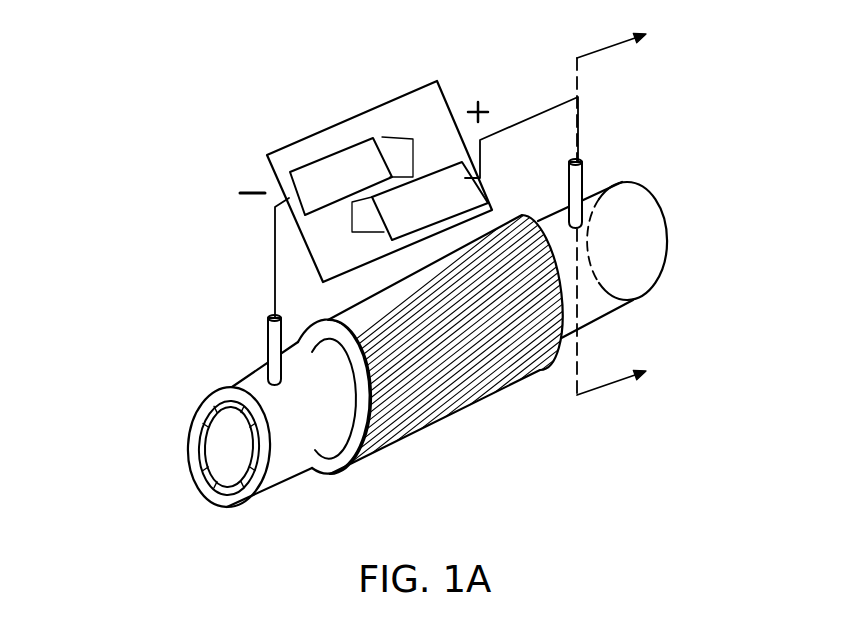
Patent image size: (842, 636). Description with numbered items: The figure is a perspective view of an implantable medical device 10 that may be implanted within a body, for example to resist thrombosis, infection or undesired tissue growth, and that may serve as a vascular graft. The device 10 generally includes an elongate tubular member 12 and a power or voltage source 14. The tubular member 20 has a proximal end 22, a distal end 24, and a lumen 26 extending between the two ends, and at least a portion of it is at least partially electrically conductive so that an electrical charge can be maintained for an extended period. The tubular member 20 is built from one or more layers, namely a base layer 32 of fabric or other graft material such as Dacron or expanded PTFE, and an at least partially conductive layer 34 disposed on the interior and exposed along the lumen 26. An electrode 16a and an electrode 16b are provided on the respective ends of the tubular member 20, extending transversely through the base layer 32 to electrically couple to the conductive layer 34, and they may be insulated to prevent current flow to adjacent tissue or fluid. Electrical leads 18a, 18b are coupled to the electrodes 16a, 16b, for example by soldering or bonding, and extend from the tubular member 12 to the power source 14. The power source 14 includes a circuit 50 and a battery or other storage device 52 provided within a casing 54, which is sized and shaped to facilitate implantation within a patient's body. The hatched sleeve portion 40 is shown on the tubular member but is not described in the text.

The medical device 10 is at (175, 172).
The elongate tubular member 12 is at (250, 535).
The power source 14 is at (416, 80).
The electrode 16a is at (267, 345).
The electrode 16b is at (583, 173).
The electrical lead 18a is at (275, 230).
The electrical lead 18b is at (559, 99).
The tubular member 20 is at (287, 487).
The proximal end 22 is at (631, 300).
The distal end 24 is at (232, 510).
The lumen 26 is at (212, 442).
The base layer 32 is at (207, 492).
The conductive layer 34 is at (212, 416).
The hatched body 40 is at (435, 422).
The circuit 50 is at (382, 140).
The battery 52 is at (377, 243).
The casing 54 is at (330, 128).